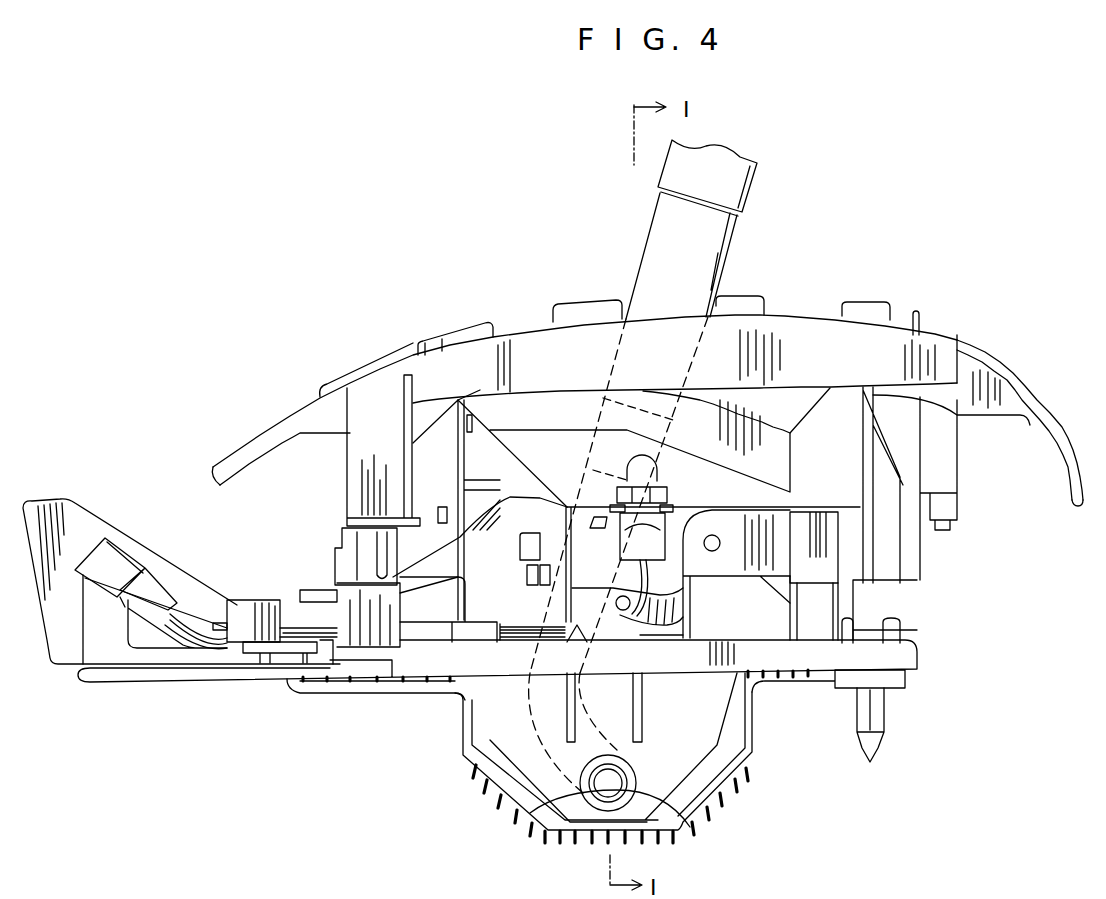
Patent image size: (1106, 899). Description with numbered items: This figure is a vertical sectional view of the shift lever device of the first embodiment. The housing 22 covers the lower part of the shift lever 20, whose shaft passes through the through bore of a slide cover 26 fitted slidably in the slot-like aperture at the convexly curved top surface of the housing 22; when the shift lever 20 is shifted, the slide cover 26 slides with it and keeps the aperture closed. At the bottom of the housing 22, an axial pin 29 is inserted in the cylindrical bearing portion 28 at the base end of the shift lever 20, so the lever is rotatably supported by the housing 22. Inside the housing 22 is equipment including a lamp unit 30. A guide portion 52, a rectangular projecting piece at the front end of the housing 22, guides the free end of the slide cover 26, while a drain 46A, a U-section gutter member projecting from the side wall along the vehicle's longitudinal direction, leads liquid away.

The shift lever 20 is at (717, 253).
The housing 22 is at (458, 309).
The slide cover 26 is at (1012, 380).
The cylindrical bearing portion 28 is at (688, 830).
The axial pin 29 is at (597, 785).
The lamp unit 30 is at (650, 472).
The drain 46A is at (807, 325).
The guide portion 52 is at (285, 430).